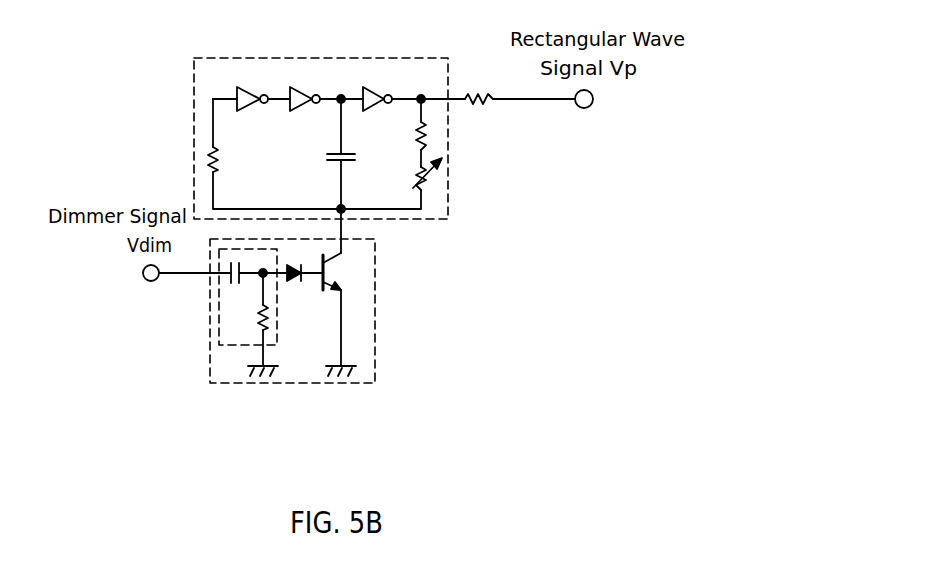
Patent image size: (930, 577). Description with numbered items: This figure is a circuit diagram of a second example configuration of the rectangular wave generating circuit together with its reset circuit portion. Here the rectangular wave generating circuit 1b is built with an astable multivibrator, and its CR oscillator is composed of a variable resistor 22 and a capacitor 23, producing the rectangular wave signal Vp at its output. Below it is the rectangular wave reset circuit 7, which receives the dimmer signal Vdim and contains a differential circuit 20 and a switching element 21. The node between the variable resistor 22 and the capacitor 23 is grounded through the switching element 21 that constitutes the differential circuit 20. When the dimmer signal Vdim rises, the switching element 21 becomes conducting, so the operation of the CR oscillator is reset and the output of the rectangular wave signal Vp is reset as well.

The rectangular wave generating circuit 1b is at (393, 165).
The rectangular wave reset circuit 7 is at (296, 340).
The differential circuit 20 is at (223, 347).
The switching element 21 is at (317, 295).
The variable resistor 22 is at (430, 187).
The capacitor 23 is at (357, 162).